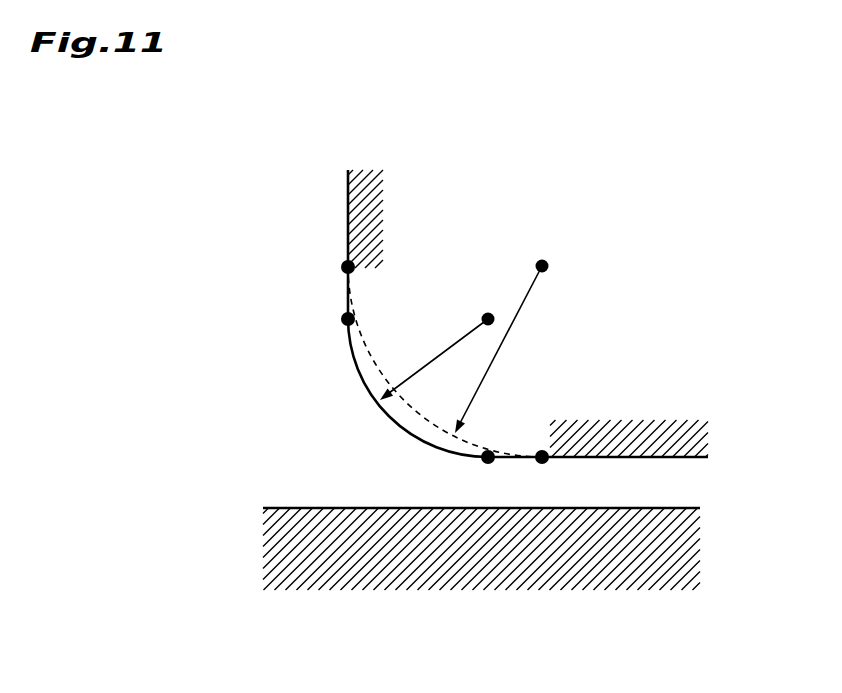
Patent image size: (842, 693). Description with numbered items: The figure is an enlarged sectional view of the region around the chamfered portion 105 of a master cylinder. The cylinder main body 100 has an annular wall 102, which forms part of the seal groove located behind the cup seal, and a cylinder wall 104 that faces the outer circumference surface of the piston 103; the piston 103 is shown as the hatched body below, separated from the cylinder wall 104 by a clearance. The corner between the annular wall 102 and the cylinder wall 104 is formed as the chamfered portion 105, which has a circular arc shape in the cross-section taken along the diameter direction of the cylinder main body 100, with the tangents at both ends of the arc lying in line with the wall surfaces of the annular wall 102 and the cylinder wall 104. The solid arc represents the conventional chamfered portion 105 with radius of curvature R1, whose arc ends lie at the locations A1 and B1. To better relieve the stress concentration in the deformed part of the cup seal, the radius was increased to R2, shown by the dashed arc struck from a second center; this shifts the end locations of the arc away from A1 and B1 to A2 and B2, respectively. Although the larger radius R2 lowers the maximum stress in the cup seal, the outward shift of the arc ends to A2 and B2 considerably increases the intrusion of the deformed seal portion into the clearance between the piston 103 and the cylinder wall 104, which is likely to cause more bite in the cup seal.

The cylinder main body 100 is at (482, 213).
The annular wall 102 is at (347, 203).
The piston 103 is at (555, 568).
The cylinder wall 104 is at (665, 458).
The chamfered portion 105 is at (365, 383).
The end location of circular arc at radius R1 A1 is at (330, 320).
The end location of circular arc at radius R2 A2 is at (330, 268).
The end location of circular arc at radius R1 B1 is at (492, 474).
The end location of circular arc at radius R2 B2 is at (542, 474).
The radius of curvature R1 is at (437, 357).
The radius of curvature R2 is at (448, 359).